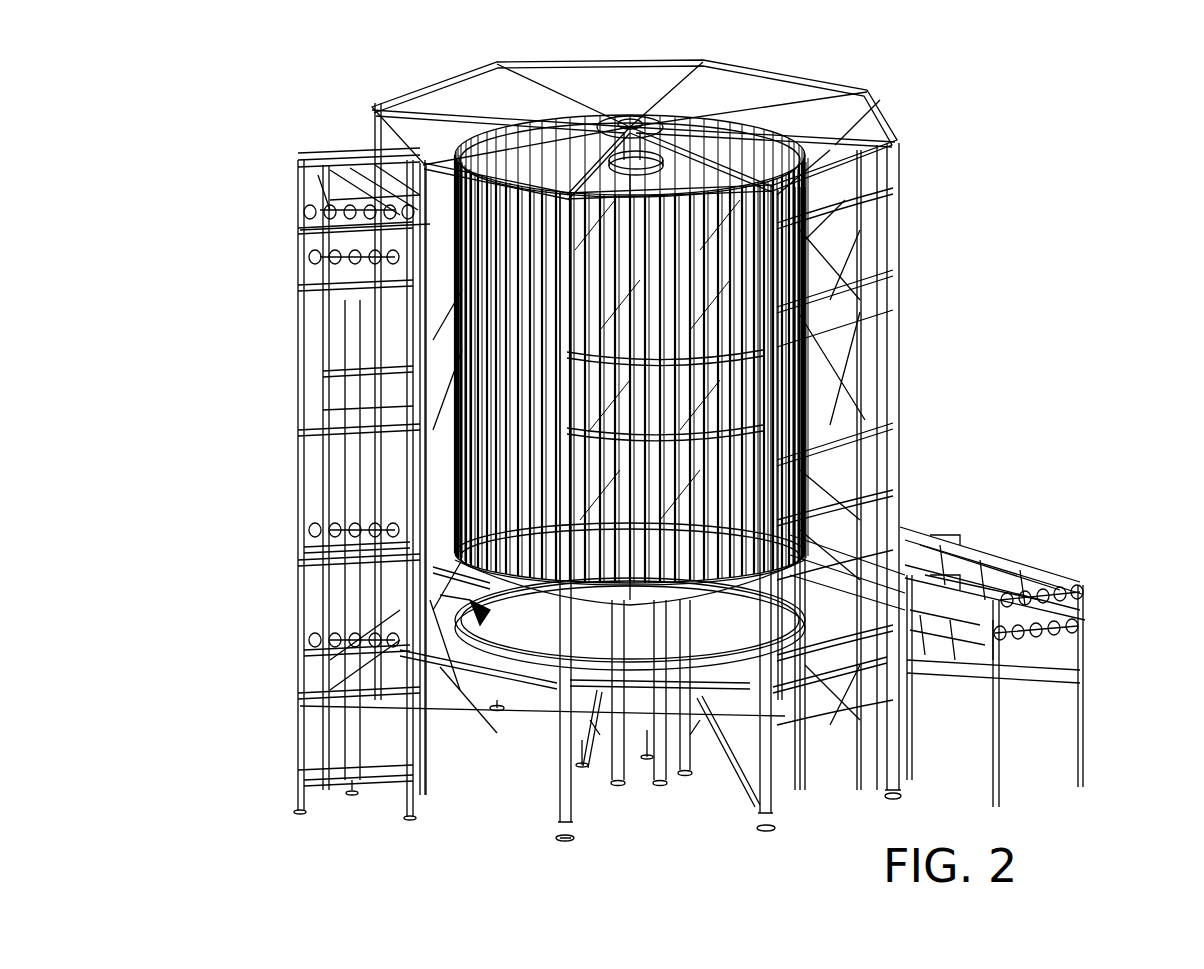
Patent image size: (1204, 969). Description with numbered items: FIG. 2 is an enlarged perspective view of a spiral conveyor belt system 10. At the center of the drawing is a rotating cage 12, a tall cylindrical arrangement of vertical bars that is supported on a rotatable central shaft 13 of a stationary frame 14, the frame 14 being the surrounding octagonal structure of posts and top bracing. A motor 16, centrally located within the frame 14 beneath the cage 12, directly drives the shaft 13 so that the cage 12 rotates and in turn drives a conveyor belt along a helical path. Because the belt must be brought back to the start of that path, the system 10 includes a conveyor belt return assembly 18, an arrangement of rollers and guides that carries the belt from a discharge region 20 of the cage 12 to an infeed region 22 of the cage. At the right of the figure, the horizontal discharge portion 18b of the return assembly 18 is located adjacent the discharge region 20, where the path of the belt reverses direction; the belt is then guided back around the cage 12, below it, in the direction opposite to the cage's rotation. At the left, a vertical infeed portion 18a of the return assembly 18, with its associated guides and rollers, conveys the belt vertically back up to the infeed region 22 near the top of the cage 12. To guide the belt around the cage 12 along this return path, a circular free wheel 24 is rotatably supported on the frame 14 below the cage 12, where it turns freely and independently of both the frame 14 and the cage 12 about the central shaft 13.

The spiral conveyor belt system 10 is at (214, 200).
The rotating cage 12 is at (805, 335).
The rotatable central shaft 13 is at (632, 115).
The stationary frame 14 is at (773, 785).
The motor 16 is at (630, 620).
The conveyor belt return assembly 18 is at (1030, 565).
The vertical infeed portion 18a is at (298, 443).
The horizontal discharge portion 18b is at (1085, 634).
The discharge region 20 is at (905, 497).
The infeed region 22 is at (345, 160).
The free wheel 24 is at (510, 650).